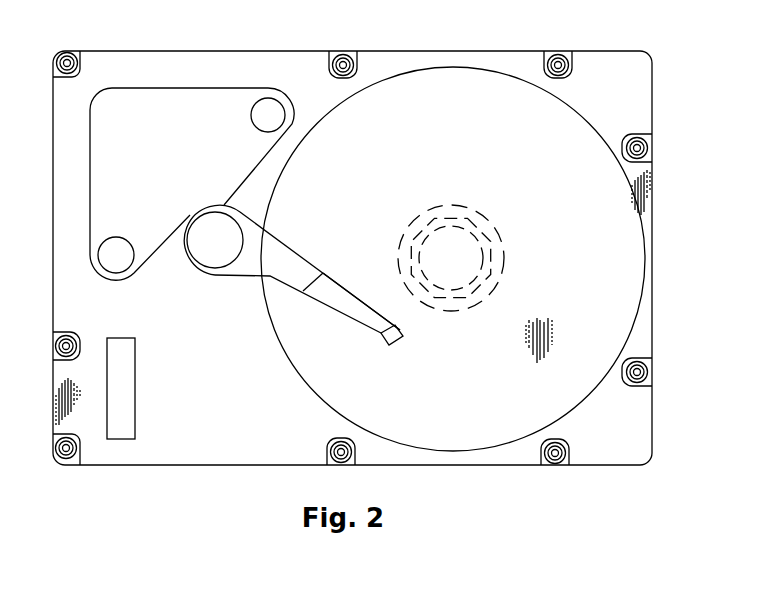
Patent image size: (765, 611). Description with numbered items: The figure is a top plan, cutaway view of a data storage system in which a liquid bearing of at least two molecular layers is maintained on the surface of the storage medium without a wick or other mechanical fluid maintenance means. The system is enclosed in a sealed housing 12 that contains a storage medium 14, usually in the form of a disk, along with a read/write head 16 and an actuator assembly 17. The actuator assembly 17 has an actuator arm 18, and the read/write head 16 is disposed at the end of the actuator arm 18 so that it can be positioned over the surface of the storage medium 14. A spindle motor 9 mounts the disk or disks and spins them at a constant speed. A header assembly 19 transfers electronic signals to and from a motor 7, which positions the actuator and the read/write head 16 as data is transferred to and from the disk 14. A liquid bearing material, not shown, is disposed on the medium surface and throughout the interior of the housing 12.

The motor 7 is at (141, 157).
The spindle motor 9 is at (441, 268).
The sealed housing 12 is at (667, 193).
The storage medium 14 is at (675, 424).
The read/write head 16 is at (391, 343).
The actuator assembly 17 is at (322, 266).
The actuator arm 18 is at (325, 287).
The header assembly 19 is at (135, 423).